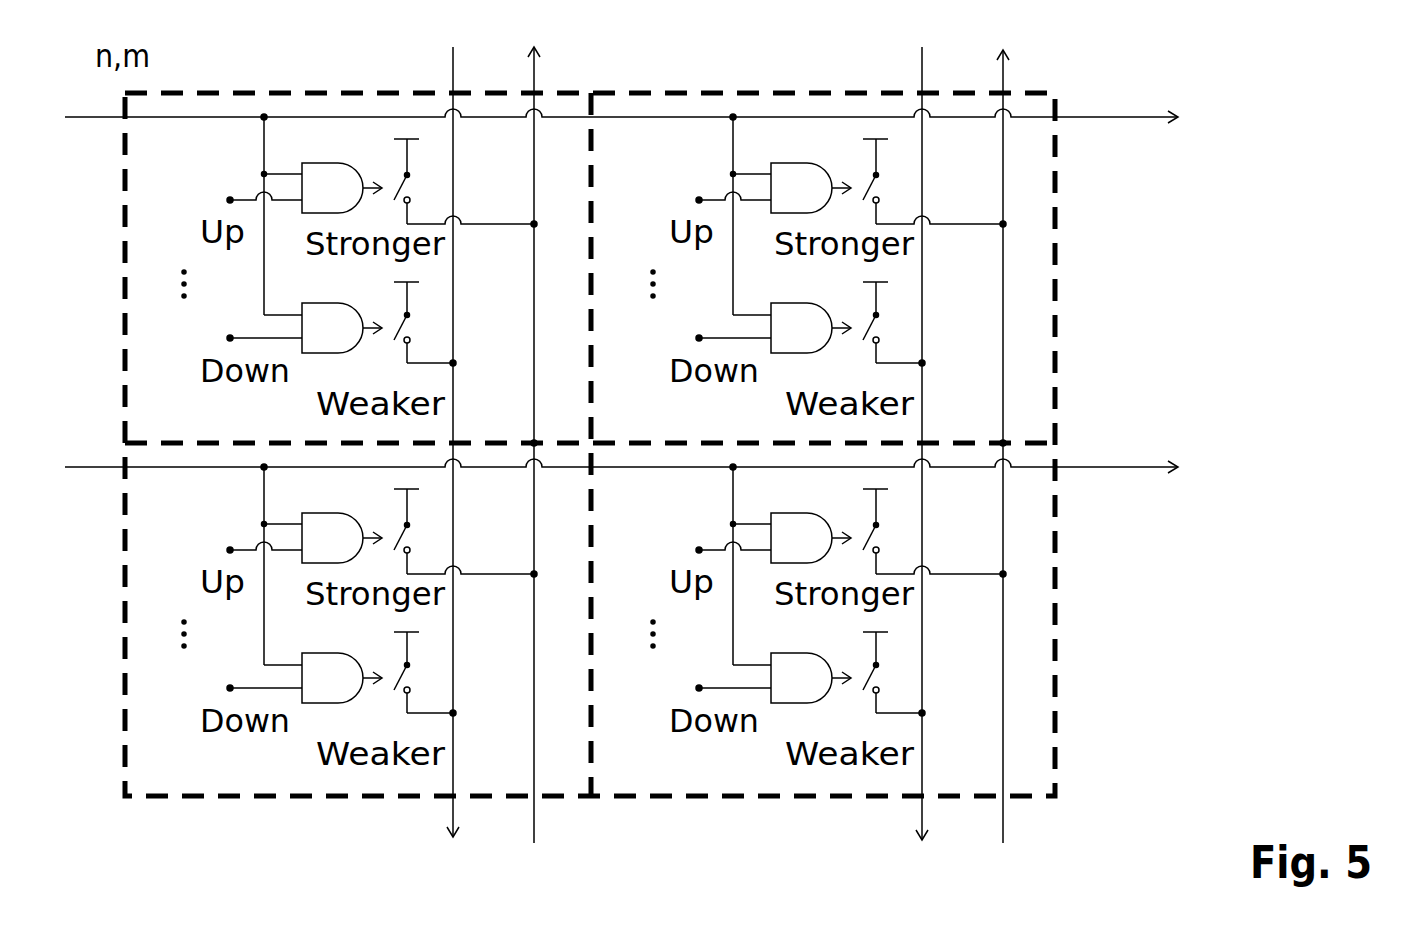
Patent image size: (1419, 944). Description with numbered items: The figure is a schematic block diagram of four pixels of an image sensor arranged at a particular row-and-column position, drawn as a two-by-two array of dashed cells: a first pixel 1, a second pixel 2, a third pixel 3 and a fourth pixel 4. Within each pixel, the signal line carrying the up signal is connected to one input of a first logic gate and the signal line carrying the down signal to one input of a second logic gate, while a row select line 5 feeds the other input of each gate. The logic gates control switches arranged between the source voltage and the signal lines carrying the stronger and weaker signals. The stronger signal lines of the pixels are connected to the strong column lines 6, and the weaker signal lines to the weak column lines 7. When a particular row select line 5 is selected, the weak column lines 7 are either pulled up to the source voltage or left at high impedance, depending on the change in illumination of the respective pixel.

The unit cell (n,m) 1 is at (359, 268).
The unit cell (n+1,m) 2 is at (828, 268).
The unit cell (n,m+1) 3 is at (359, 618).
The unit cell (n+1,m+1) 4 is at (828, 618).
The row select lines RowSel 5 is at (737, 282).
The strong column lines c_st 6 is at (843, 422).
The weak column lines c_wk 7 is at (644, 470).